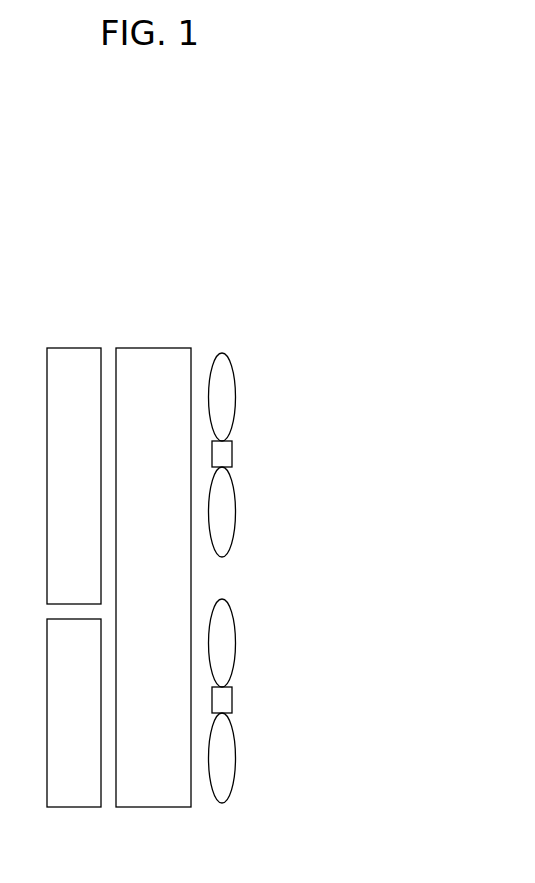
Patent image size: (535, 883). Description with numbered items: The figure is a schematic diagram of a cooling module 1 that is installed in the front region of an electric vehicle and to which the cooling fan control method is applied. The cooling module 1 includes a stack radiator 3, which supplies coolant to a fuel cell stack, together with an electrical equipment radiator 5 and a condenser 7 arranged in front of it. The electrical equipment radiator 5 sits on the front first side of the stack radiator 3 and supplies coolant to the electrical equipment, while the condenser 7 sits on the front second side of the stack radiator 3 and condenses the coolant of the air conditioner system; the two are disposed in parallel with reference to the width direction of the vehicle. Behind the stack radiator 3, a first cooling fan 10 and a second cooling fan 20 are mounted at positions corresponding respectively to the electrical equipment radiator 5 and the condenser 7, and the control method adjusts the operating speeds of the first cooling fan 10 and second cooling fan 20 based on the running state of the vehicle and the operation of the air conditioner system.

The cooling module 1 is at (113, 266).
The stack radiator 3 is at (152, 348).
The electrical equipment radiator 5 is at (73, 348).
The condenser 7 is at (73, 807).
The first cooling fan 10 is at (232, 455).
The second cooling fan 20 is at (232, 700).